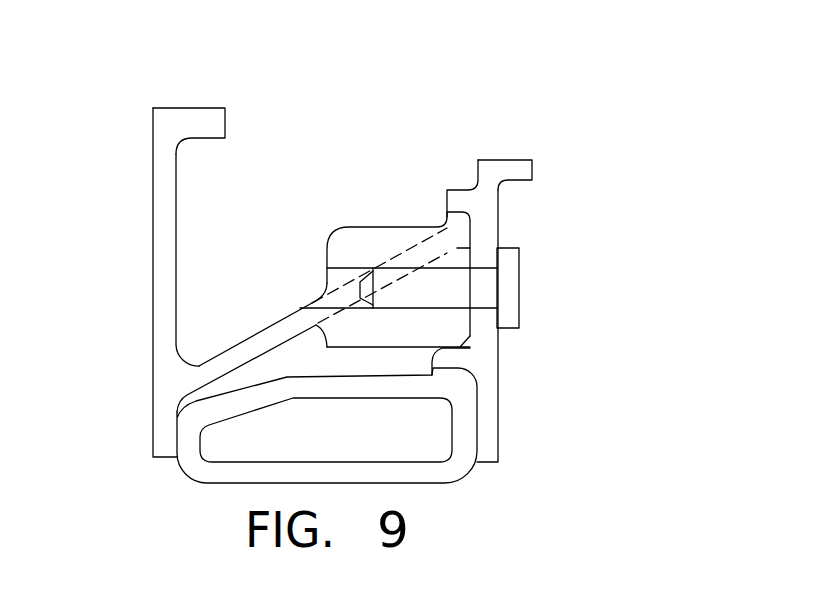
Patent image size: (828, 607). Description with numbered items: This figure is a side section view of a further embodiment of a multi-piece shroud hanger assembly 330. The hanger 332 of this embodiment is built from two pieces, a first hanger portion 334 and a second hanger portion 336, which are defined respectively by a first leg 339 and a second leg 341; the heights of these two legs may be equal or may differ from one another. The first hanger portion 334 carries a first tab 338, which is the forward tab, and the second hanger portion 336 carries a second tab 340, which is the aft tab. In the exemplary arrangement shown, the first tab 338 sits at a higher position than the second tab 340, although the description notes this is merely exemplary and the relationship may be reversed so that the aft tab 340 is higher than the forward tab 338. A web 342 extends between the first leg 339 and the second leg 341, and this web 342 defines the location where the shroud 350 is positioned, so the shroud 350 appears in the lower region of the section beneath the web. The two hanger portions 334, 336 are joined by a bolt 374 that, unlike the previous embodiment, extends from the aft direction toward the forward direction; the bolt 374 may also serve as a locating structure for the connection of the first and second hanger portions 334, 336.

The shroud hanger assembly 330 is at (548, 77).
The hanger 332 is at (362, 83).
The first hanger portion 334 is at (128, 215).
The second hanger portion 336 is at (542, 198).
The first tab 338 is at (203, 122).
The first leg 339 is at (165, 320).
The second tab 340 is at (492, 172).
The second leg 341 is at (488, 233).
The web 342 is at (250, 347).
The shroud 350 is at (425, 497).
The bolt 374 is at (514, 289).